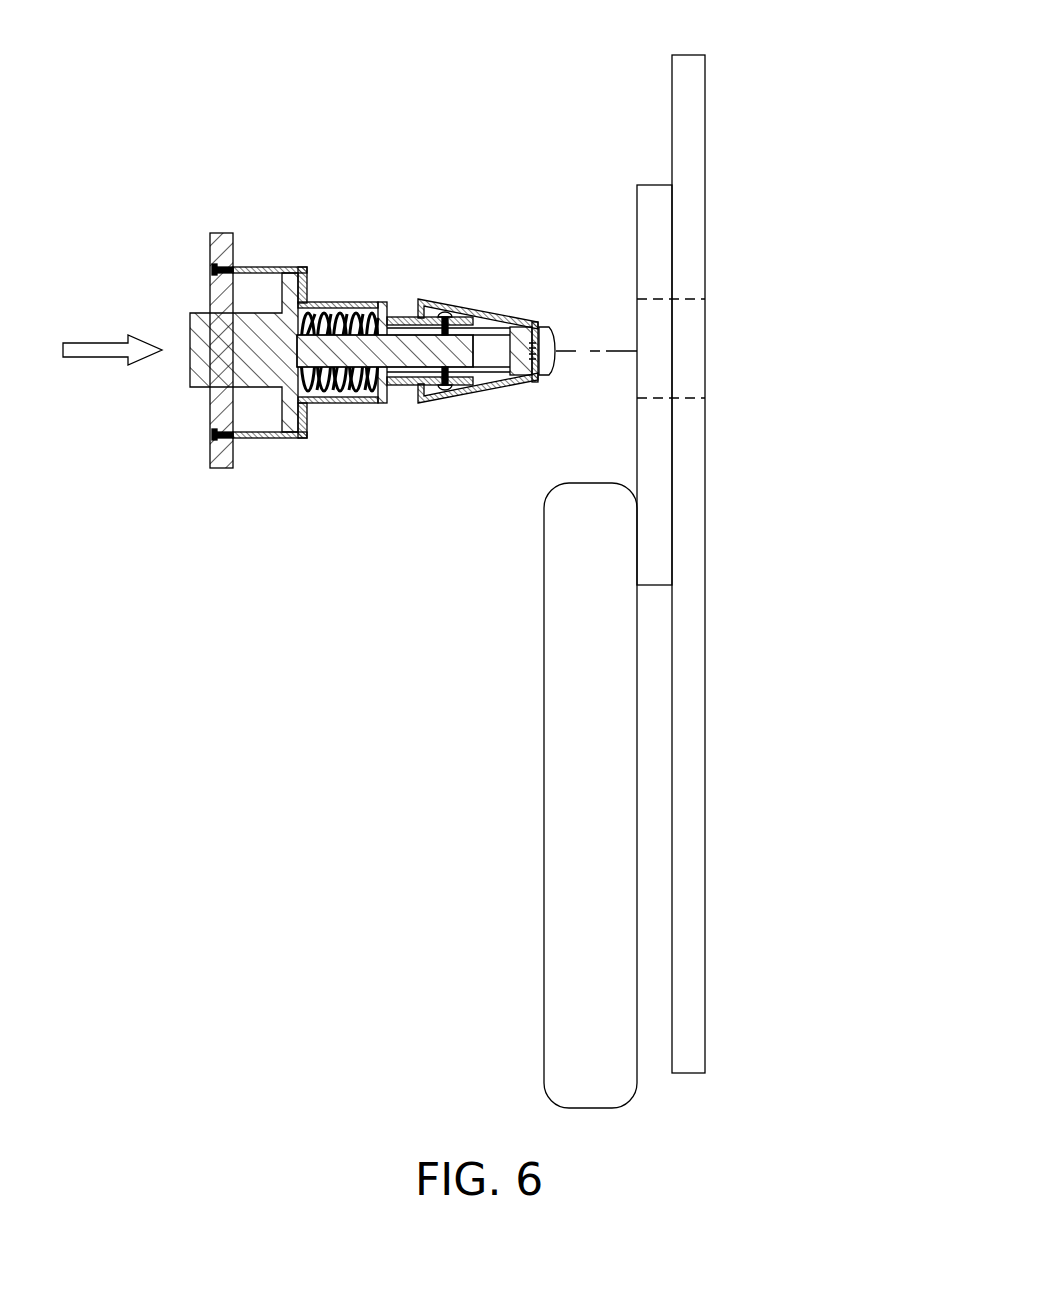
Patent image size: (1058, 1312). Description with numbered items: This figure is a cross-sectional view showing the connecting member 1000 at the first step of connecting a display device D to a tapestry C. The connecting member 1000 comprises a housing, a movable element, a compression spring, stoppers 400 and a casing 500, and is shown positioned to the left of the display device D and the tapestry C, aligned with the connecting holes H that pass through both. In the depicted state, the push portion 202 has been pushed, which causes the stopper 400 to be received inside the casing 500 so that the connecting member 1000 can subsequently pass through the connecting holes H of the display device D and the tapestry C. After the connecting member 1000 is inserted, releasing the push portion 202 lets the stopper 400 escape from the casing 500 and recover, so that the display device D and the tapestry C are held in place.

The connecting member 1000 is at (198, 187).
The push portion 202 is at (188, 334).
The stopper 400 is at (403, 317).
The casing 500 is at (482, 305).
The tapestry C is at (688, 62).
The display device D is at (645, 216).
The connecting holes H is at (658, 376).